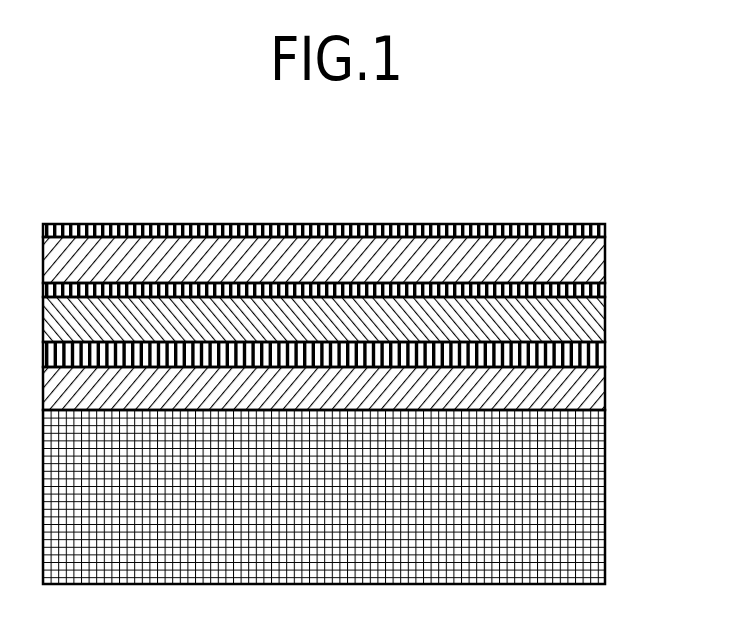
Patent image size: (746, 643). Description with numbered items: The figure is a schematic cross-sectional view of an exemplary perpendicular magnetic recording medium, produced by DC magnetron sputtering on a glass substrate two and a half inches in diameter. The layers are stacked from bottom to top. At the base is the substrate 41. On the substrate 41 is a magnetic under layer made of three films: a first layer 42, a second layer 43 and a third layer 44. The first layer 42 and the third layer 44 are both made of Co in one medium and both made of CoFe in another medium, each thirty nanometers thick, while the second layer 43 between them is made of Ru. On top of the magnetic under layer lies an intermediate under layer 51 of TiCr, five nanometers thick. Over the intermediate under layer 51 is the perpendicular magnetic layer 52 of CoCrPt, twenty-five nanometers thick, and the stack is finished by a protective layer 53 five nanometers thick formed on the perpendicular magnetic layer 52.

The substrate 41 is at (597, 489).
The first layer 42 is at (597, 396).
The second layer 43 is at (596, 351).
The third layer 44 is at (592, 317).
The intermediate under layer 51 is at (598, 287).
The perpendicular magnetic layer 52 is at (597, 260).
The protective layer 53 is at (598, 229).